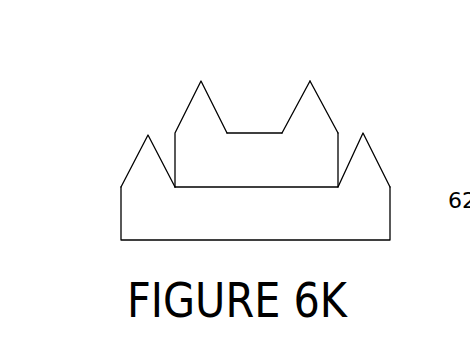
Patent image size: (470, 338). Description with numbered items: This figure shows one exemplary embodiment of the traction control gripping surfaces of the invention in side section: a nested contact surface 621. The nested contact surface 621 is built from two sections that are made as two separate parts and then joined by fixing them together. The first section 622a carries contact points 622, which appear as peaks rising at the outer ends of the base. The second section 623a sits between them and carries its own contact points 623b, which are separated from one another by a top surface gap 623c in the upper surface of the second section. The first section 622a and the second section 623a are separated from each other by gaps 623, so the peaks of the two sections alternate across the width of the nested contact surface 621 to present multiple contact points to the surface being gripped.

The nested contact surface 621 is at (120, 215).
The contact points 622 is at (137, 152).
The first section 622a is at (365, 205).
The gaps 623 is at (165, 148).
The second section 623a is at (308, 153).
The contact points 623b is at (310, 104).
The top surface gap 623c is at (256, 120).